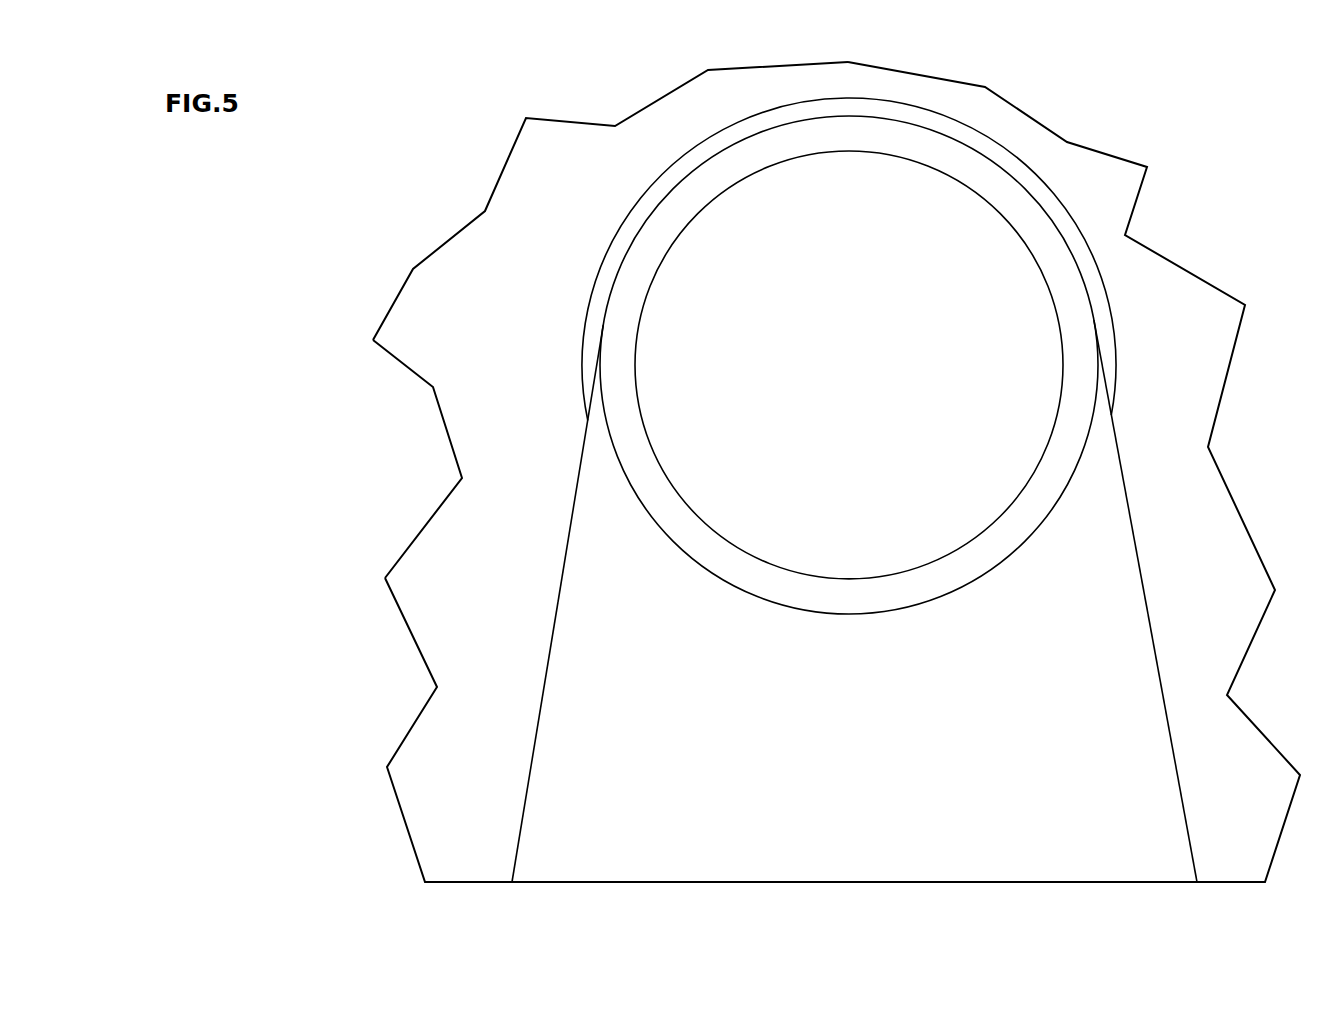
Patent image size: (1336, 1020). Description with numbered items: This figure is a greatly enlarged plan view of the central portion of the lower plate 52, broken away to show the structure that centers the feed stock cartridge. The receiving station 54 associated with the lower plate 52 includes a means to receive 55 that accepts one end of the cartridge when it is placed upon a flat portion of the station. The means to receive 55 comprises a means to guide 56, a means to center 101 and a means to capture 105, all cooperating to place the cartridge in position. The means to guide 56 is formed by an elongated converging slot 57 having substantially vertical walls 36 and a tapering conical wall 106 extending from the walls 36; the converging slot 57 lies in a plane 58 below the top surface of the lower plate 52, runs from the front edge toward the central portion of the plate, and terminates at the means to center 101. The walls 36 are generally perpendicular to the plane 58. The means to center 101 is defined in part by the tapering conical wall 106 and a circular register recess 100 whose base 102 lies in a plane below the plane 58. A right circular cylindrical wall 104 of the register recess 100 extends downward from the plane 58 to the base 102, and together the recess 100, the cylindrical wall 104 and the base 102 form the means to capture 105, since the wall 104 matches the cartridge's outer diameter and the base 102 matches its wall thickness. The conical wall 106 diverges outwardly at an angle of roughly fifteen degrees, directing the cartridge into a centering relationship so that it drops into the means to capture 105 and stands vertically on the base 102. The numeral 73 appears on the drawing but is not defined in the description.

The means to center 101 is at (571, 201).
The receiving station 54 is at (370, 459).
The means to receive 55 is at (392, 730).
The lower plate 52 is at (1222, 580).
The elongated converging slot 57 is at (859, 717).
The means to guide 56 is at (853, 513).
The plane 58 is at (636, 722).
The substantially vertical walls 36 is at (1167, 707).
The tapering conical wall 106 is at (905, 114).
The circular register recess 100 is at (945, 158).
The right circular cylindrical wall 104 is at (1077, 263).
The base 102 is at (858, 150).
The means to capture 105 is at (937, 258).
The bore 73 is at (776, 347).